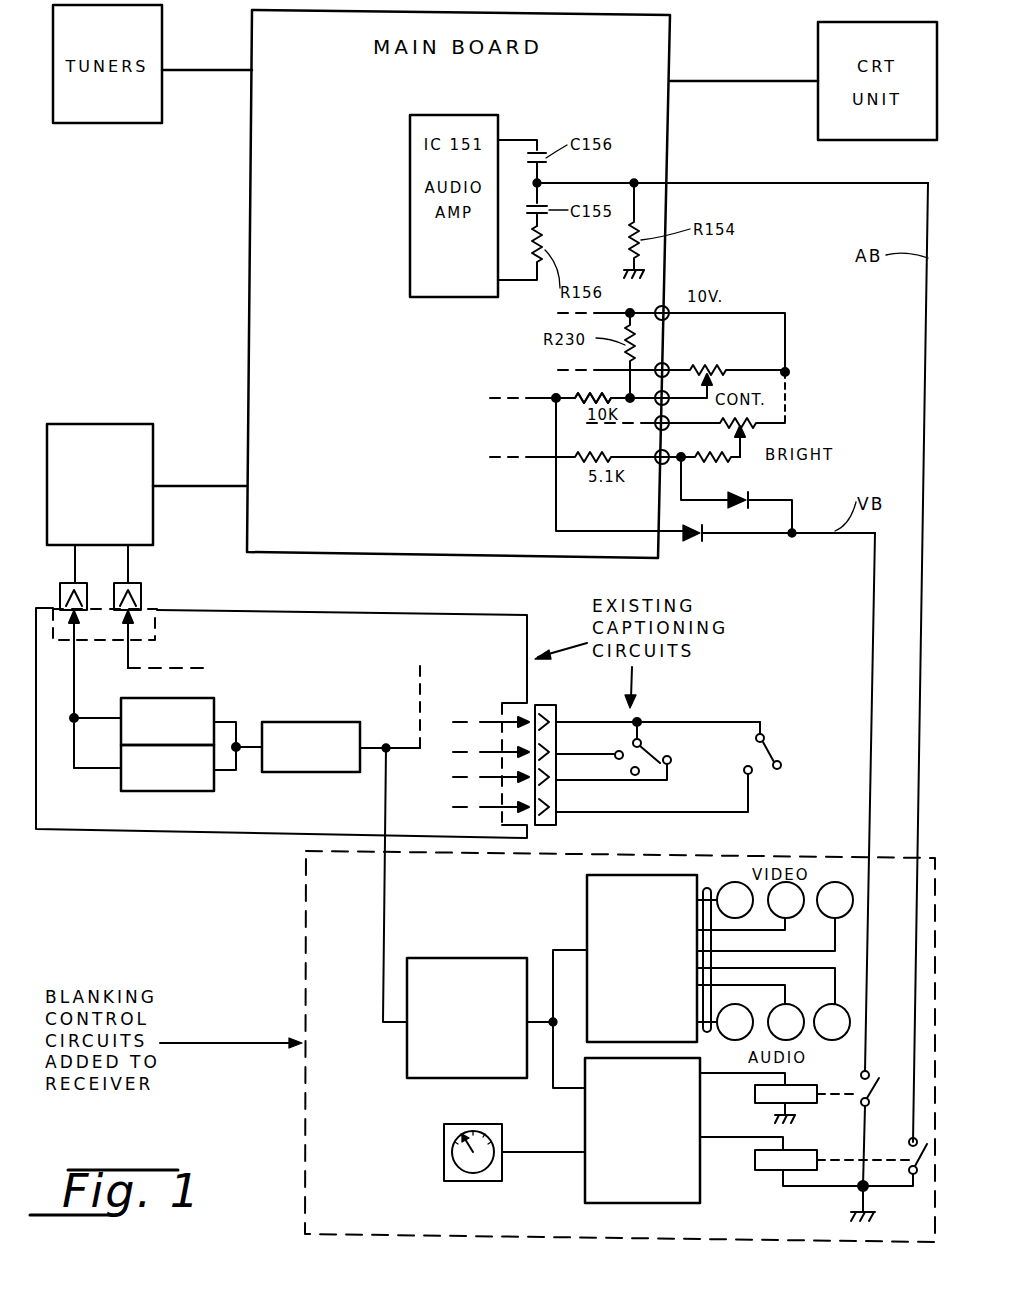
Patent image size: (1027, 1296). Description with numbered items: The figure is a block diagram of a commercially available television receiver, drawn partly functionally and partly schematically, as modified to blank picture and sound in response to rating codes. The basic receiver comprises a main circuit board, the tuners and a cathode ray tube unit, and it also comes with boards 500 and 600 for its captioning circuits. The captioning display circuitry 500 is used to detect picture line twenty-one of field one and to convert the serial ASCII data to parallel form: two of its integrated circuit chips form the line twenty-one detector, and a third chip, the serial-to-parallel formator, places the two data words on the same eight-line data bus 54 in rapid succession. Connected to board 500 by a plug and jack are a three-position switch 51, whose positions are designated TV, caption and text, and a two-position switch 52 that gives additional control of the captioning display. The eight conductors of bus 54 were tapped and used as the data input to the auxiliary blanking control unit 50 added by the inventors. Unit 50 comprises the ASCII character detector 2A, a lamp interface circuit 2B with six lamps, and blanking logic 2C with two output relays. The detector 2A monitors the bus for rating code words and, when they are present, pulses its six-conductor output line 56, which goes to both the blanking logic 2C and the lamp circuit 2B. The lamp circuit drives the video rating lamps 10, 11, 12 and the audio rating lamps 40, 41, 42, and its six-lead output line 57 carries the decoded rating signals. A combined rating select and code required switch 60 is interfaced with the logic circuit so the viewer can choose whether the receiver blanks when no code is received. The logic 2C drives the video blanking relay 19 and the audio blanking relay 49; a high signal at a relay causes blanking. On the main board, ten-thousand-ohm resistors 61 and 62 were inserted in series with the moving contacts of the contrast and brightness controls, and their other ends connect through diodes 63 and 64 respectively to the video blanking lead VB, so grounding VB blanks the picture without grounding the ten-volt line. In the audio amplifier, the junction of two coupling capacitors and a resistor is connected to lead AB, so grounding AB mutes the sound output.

The captioning circuit board 600 is at (112, 489).
The captioning display circuitry 500 is at (326, 674).
The contrast series resistor 61 is at (590, 393).
The brightness series resistor 62 is at (713, 450).
The diode 63 is at (743, 492).
The diode 64 is at (694, 543).
The eight-line parallel data bus 54 is at (372, 745).
The three-position switch 51 is at (648, 750).
The two-position switch 52 is at (765, 752).
The output line of the lamp interface circuit 57 is at (706, 886).
The blanking control unit 50 is at (303, 900).
The ASCII character detector 2A is at (460, 957).
The lamp interface circuit 2B is at (587, 896).
The blanking logic 2C is at (585, 1129).
The output line of the ASCII character detector 56 is at (538, 1018).
The combined rating select and code required switch 60 is at (444, 1150).
The video rating lamp 10 is at (738, 917).
The video rating lamp 11 is at (790, 918).
The video rating lamp 12 is at (838, 918).
The audio rating lamp 40 is at (737, 1004).
The audio rating lamp 41 is at (790, 1006).
The audio rating lamp 42 is at (849, 1012).
The video blanking relay 19 is at (843, 1098).
The audio blanking relay 49 is at (866, 1166).